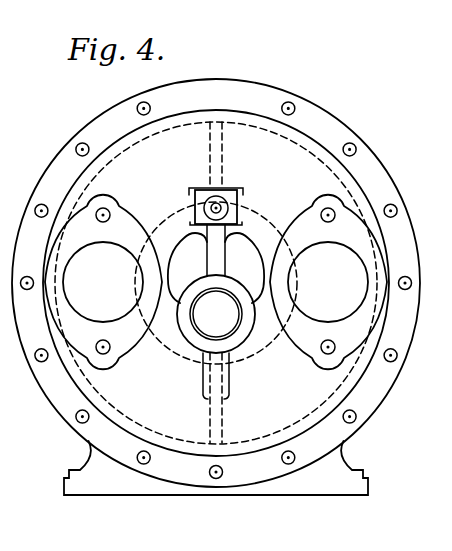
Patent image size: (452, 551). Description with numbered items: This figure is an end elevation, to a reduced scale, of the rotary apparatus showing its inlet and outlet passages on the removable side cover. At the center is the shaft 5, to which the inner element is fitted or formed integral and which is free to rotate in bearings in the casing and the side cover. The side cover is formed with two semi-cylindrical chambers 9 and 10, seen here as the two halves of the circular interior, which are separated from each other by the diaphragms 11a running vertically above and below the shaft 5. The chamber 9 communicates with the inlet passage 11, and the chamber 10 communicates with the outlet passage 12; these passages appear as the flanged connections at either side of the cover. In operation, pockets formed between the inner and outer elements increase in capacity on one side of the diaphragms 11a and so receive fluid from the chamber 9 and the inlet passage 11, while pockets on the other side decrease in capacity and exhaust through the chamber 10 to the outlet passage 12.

The shaft 5 is at (216, 314).
The chamber 9 is at (294, 172).
The chamber 10 is at (140, 157).
The inlet passage 11 is at (328, 282).
The diaphragm 11a is at (224, 157).
The outlet passage 12 is at (103, 282).